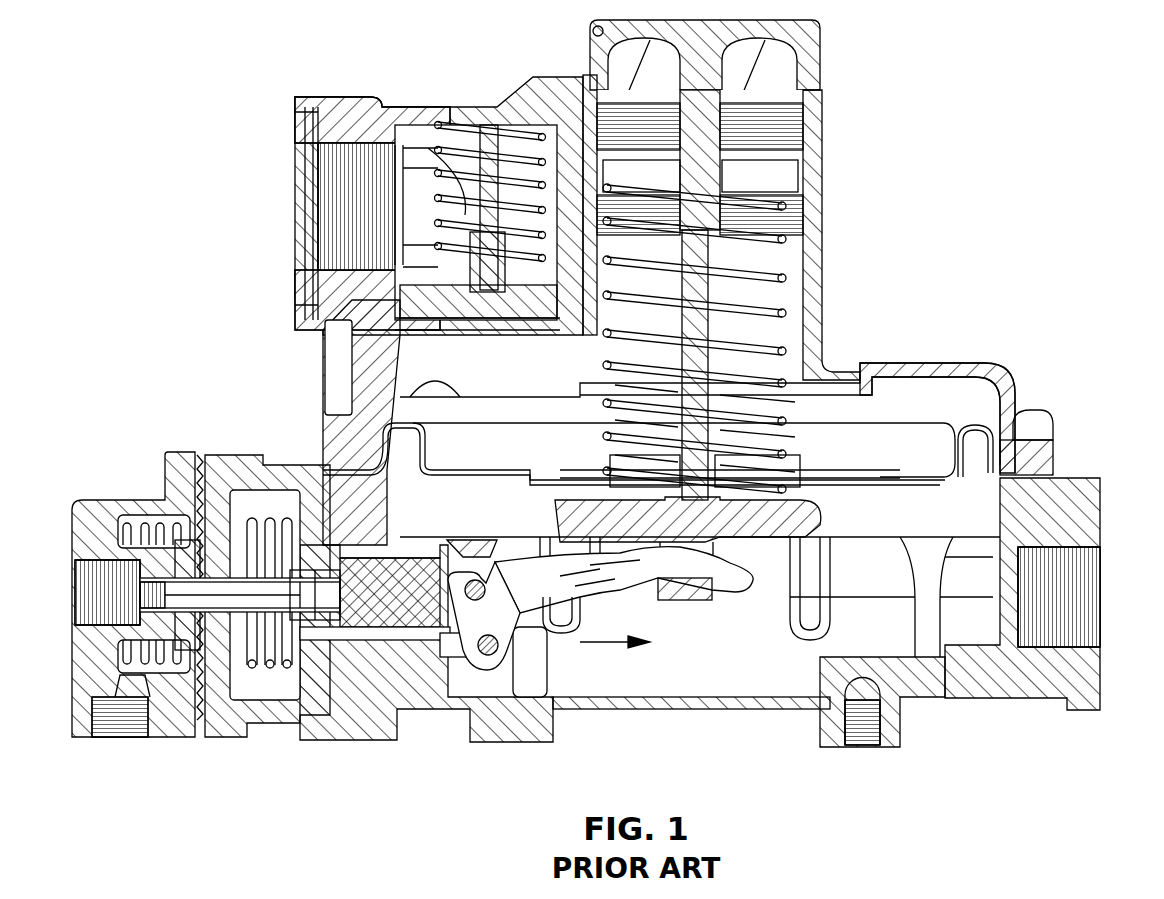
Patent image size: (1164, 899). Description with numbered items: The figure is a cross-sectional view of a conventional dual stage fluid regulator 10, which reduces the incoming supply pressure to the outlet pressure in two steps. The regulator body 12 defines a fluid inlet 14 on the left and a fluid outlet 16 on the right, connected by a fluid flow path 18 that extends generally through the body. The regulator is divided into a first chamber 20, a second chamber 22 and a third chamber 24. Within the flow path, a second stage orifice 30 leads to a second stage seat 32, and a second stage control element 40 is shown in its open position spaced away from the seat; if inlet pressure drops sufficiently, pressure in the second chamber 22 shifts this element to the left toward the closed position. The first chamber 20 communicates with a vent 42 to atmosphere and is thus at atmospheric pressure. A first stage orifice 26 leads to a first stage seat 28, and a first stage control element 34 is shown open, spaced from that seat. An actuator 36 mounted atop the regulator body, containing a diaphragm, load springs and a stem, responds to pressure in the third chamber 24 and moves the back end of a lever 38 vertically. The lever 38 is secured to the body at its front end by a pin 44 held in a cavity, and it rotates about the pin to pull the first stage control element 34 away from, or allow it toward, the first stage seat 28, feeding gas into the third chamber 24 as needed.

The dual stage fluid regulator 10 is at (589, 401).
The regulator body 12 is at (517, 720).
The fluid inlet 14 is at (75, 597).
The fluid outlet 16 is at (1103, 605).
The fluid flow path 18 is at (604, 652).
The first chamber 20 is at (193, 497).
The second chamber 22 is at (245, 500).
The third chamber 24 is at (778, 678).
The first stage orifice 26 is at (290, 592).
The first stage seat 28 is at (322, 692).
The second stage orifice 30 is at (170, 595).
The second stage seat 32 is at (233, 543).
The first stage control element 34 is at (407, 640).
The actuator 36 is at (837, 418).
The lever 38 is at (656, 566).
The second stage control element 40 is at (227, 657).
The vent 42 is at (123, 737).
The pin 44 is at (486, 655).